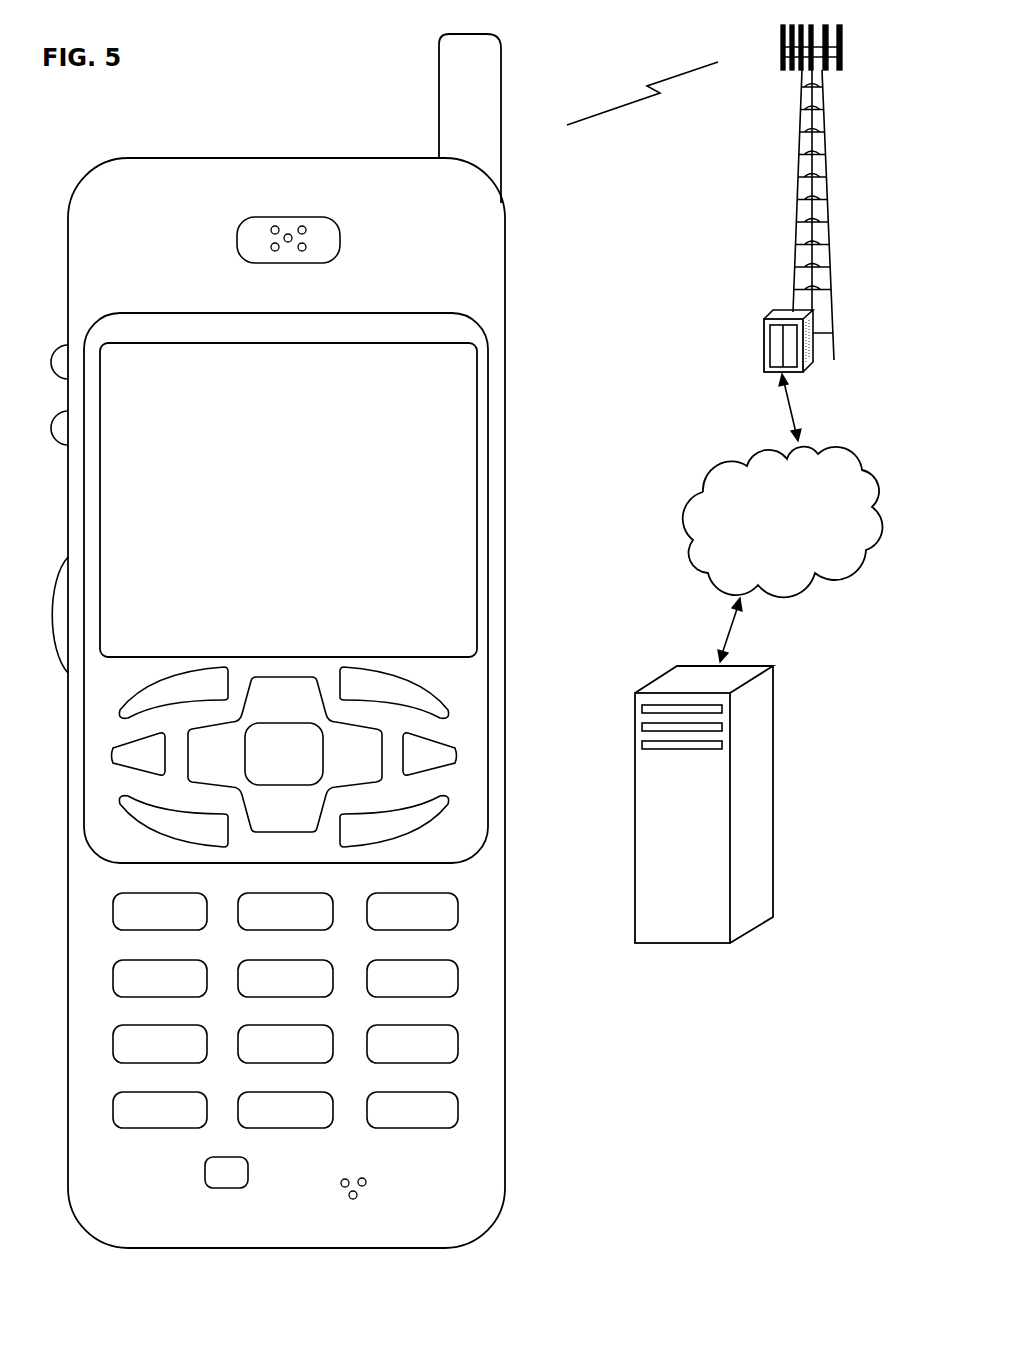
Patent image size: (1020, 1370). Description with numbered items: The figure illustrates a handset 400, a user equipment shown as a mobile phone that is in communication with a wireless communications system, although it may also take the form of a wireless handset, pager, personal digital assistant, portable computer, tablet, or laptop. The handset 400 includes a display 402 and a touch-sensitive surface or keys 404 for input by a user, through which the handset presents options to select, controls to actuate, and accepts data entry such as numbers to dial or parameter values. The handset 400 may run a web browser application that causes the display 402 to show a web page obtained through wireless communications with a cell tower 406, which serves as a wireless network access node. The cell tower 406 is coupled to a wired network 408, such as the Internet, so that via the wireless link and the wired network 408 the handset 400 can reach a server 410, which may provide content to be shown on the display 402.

The handset 400 is at (128, 1247).
The display 402 is at (477, 357).
The keys 404 is at (513, 663).
The cell tower 406 is at (798, 213).
The wired network 408 is at (698, 572).
The server 410 is at (682, 943).